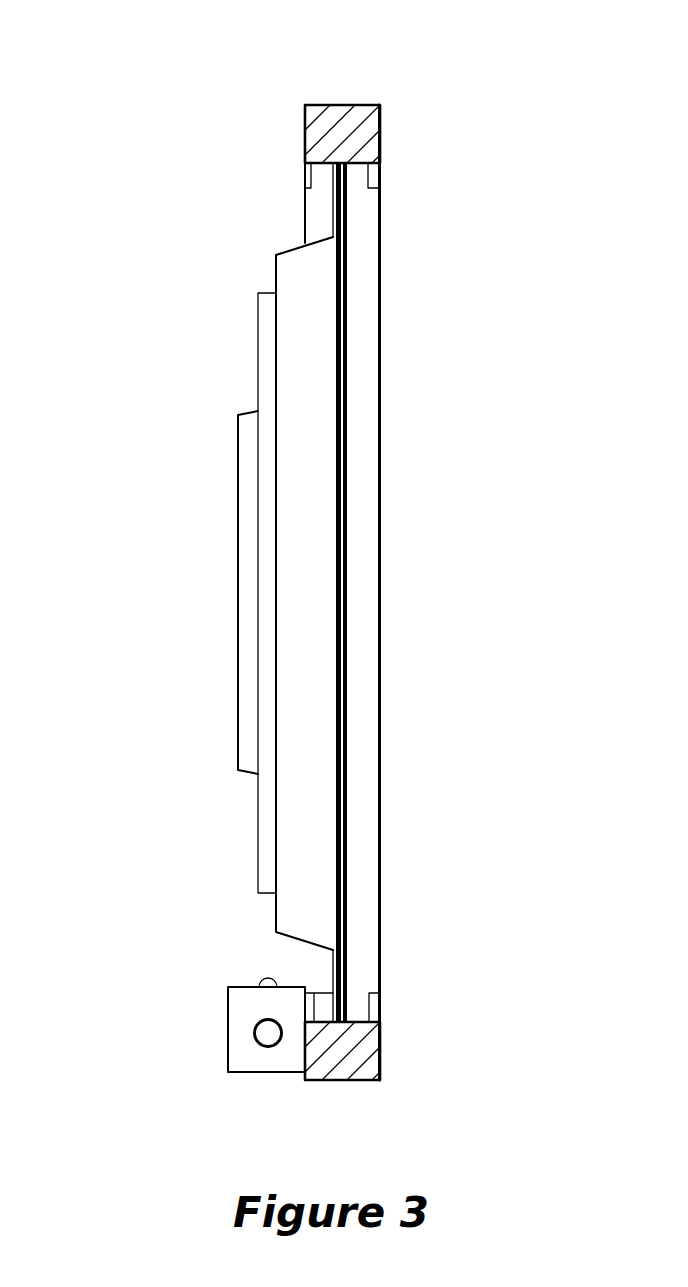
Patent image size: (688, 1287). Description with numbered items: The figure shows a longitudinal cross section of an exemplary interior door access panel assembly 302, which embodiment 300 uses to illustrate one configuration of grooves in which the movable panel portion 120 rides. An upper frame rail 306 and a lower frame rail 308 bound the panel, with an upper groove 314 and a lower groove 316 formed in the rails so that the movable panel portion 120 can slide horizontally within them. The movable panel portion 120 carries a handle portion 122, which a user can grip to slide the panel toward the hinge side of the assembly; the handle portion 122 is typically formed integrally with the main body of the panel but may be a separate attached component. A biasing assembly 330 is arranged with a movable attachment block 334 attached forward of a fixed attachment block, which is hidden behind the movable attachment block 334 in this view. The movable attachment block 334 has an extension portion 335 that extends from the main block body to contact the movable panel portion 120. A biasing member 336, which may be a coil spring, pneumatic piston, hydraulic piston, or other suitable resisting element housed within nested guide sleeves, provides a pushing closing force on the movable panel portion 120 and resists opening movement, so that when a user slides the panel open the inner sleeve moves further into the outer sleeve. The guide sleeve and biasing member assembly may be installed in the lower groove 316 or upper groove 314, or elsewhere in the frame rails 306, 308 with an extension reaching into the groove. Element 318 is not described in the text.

The embodiment 300 is at (510, 91).
The assembly 302 is at (148, 208).
The upper frame rail 306 is at (340, 120).
The lower frame rail 308 is at (358, 1055).
The upper groove 314 is at (318, 175).
The lower groove 316 is at (318, 995).
The front panel 318 is at (362, 258).
The extension portion 335 is at (337, 983).
The movable panel portion 120 is at (290, 275).
The handle portion 122 is at (248, 590).
The biasing assembly 330 is at (161, 927).
The movable attachment block 334 is at (250, 1012).
The biasing member 336 is at (268, 1035).